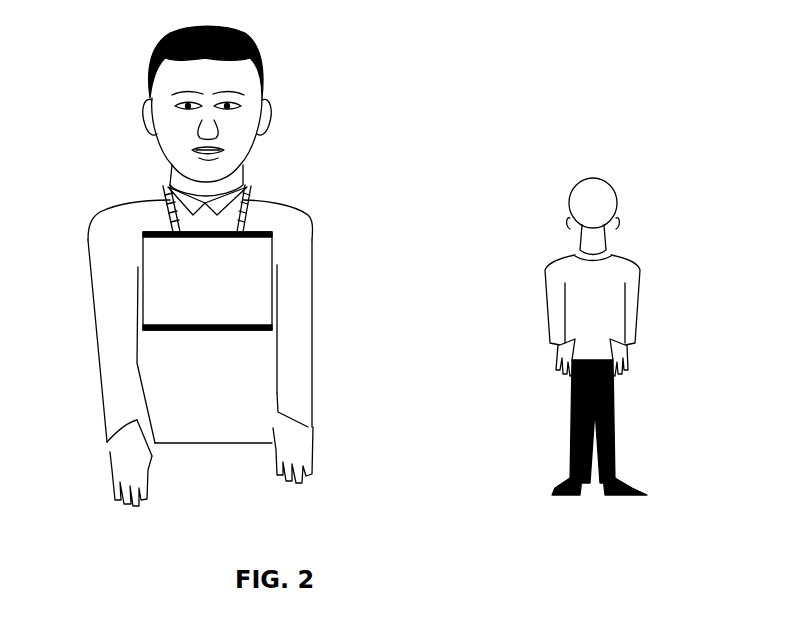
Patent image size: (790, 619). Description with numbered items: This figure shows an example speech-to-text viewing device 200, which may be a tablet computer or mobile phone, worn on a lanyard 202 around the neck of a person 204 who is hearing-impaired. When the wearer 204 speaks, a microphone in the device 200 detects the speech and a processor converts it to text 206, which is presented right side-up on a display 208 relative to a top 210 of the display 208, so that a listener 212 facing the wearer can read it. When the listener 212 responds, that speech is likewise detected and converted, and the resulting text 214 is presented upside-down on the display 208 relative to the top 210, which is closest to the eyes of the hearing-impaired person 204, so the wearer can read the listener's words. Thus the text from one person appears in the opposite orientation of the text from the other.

The speech-to-text viewing device 200 is at (282, 247).
The lanyard 202 is at (246, 217).
The person 204 is at (262, 82).
The text 206 is at (148, 310).
The display 208 is at (263, 285).
The top of the display 210 is at (143, 232).
The listener 212 is at (622, 202).
The listener-generated text 214 is at (157, 263).